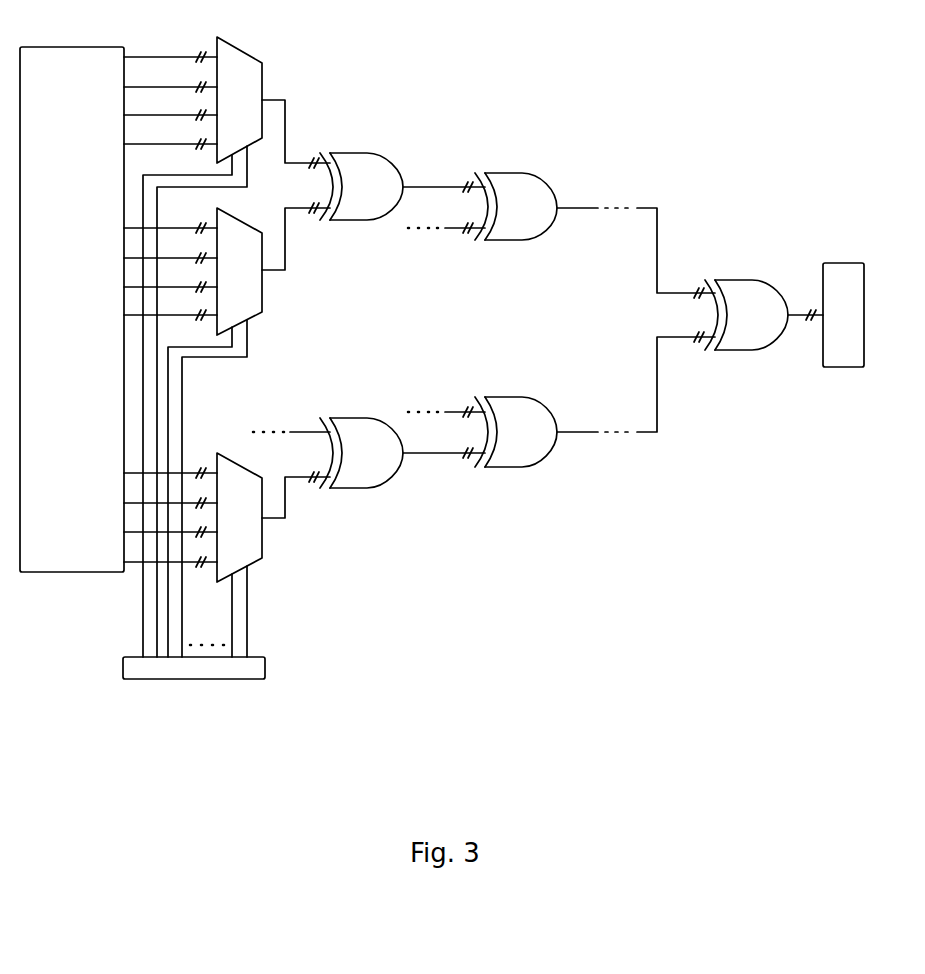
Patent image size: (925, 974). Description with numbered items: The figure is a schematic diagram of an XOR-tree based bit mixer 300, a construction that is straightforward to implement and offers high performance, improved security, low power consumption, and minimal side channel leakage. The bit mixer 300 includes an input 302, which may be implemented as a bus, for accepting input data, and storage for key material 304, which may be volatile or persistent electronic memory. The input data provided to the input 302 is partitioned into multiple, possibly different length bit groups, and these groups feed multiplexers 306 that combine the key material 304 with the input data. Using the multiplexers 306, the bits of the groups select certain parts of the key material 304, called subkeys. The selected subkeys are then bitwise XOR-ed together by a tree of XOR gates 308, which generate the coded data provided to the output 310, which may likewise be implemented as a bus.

The bit mixer 300 is at (442, 352).
The input 302 is at (265, 667).
The key material 304 is at (96, 296).
The multiplexers 306 is at (263, 75).
The XOR gates 308 is at (515, 395).
The output 310 is at (842, 262).